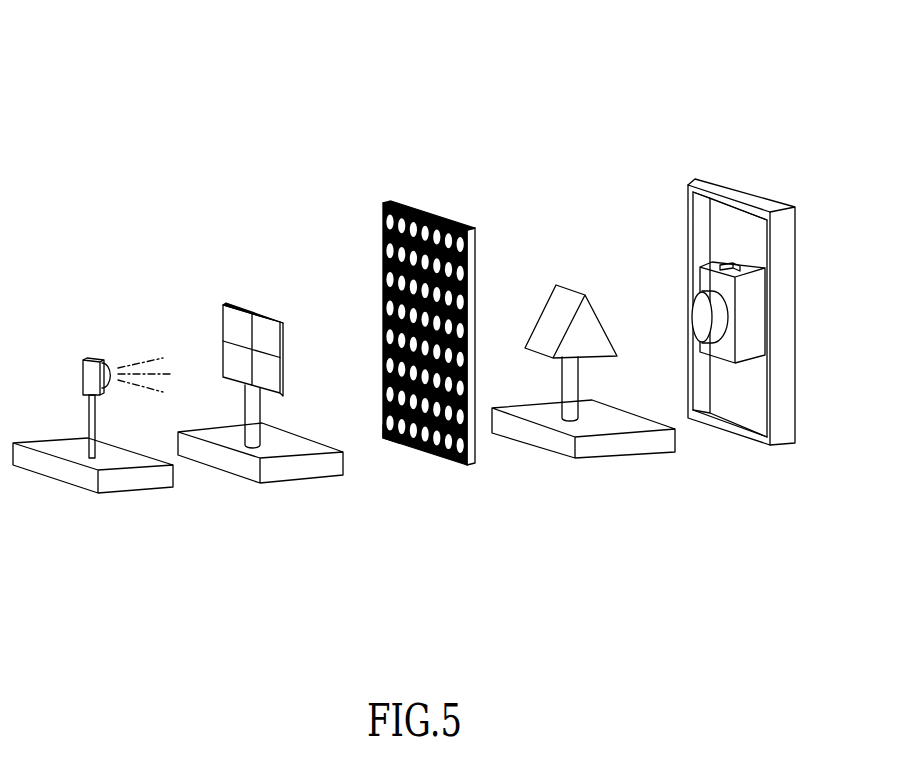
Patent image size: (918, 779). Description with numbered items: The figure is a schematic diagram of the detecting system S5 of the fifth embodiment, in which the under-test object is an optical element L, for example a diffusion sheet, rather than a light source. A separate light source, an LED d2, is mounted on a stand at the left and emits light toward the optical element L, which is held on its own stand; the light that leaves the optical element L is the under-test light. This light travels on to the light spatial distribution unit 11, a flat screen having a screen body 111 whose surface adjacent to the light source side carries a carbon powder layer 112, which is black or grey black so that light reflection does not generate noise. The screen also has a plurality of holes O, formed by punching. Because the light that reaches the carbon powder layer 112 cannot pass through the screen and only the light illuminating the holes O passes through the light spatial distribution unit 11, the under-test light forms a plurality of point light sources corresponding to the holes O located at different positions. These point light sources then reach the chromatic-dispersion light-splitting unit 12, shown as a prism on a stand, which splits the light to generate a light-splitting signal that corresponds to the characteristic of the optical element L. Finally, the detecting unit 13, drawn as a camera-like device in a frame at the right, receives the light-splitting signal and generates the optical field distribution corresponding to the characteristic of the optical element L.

The detecting system S5 is at (167, 84).
The LED d2 is at (92, 377).
The optical element L is at (228, 328).
The light spatial distribution unit 11 is at (436, 336).
The screen body 111 is at (472, 444).
The carbon powder layer 112 is at (440, 457).
The holes O is at (383, 439).
The chromatic-dispersion light-splitting unit 12 is at (542, 325).
The detecting unit 13 is at (692, 310).